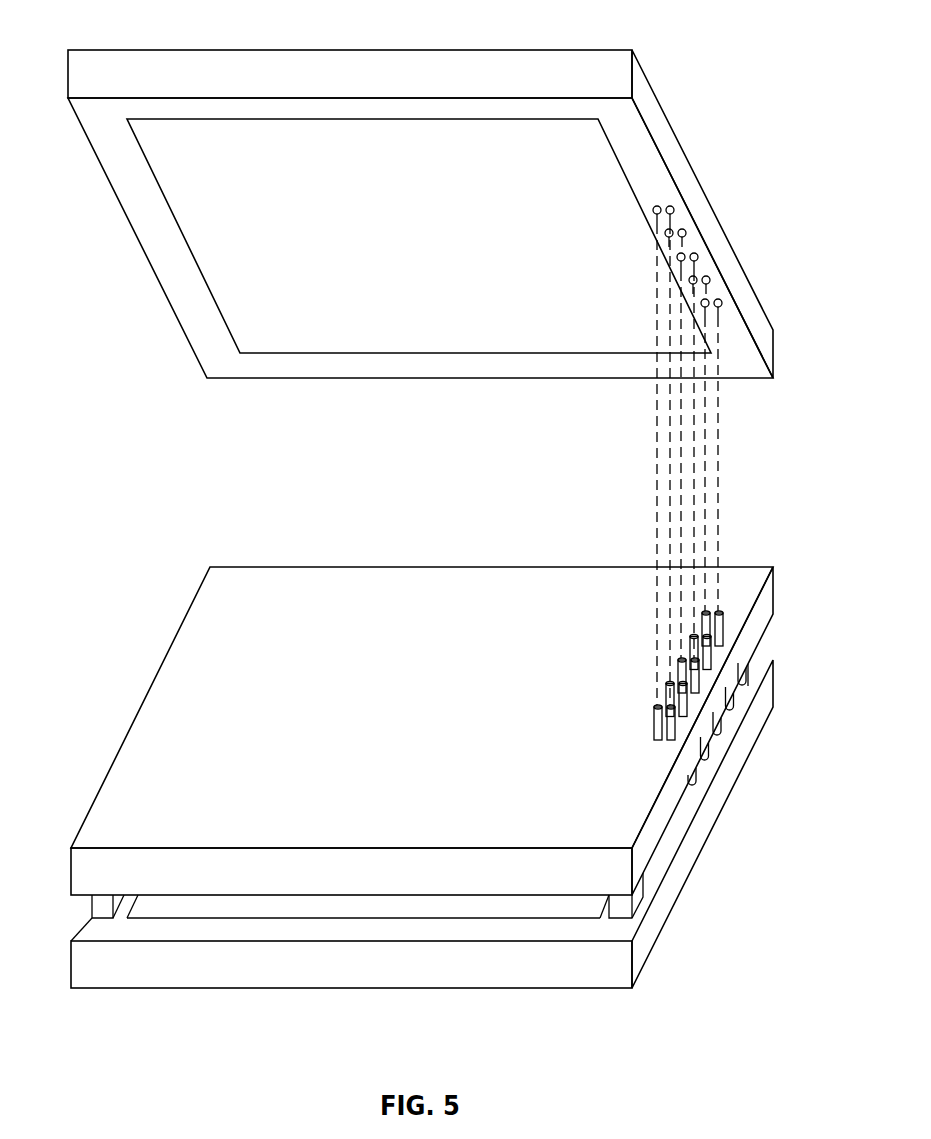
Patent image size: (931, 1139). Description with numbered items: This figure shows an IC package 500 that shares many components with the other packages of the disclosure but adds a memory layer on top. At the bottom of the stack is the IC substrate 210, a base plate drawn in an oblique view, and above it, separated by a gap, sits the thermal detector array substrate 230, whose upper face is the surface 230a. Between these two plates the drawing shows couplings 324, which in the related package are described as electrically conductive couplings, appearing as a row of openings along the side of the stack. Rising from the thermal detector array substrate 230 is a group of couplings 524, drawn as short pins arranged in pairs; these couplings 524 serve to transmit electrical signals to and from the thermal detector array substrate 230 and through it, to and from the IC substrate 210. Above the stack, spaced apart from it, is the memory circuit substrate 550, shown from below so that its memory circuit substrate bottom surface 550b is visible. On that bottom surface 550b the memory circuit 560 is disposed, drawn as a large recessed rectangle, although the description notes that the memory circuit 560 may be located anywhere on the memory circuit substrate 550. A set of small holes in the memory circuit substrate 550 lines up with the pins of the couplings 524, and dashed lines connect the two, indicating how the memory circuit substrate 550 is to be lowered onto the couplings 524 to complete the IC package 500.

The IC package 500 is at (438, 495).
The memory circuit substrate 550 is at (713, 227).
The memory circuit substrate bottom surface 550b is at (227, 365).
The memory circuit 560 is at (433, 246).
The thermal detector array substrate 230 is at (748, 630).
The top surface of middle plate 230a is at (232, 585).
The couplings 524 is at (653, 718).
The couplings 324 is at (710, 750).
The IC substrate 210 is at (707, 823).